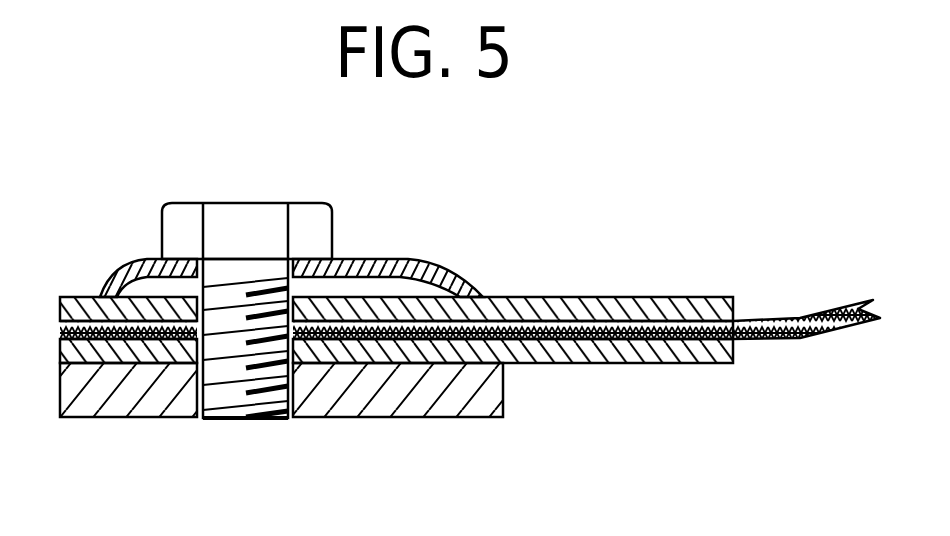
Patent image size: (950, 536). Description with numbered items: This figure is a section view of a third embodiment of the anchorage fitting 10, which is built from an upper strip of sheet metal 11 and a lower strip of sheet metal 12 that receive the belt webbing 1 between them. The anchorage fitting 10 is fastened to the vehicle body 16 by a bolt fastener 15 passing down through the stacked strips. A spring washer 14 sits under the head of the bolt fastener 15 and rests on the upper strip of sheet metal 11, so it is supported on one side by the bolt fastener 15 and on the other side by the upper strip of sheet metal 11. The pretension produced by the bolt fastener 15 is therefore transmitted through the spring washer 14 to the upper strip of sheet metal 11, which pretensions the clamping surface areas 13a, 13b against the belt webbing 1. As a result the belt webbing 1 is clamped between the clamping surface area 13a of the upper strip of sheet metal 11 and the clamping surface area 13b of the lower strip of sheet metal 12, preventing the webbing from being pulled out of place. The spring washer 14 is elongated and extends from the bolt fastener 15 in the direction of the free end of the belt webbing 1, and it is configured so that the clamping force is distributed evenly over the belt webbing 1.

The belt webbing 1 is at (820, 313).
The anchorage fitting 10 is at (517, 222).
The upper strip of sheet metal 11 is at (539, 299).
The lower strip of sheet metal 12 is at (530, 363).
The clamping surface area 13a is at (670, 341).
The clamping surface area 13b is at (616, 322).
The spring washer 14 is at (410, 265).
The bolt fastener 15 is at (255, 222).
The vehicle body 16 is at (425, 385).